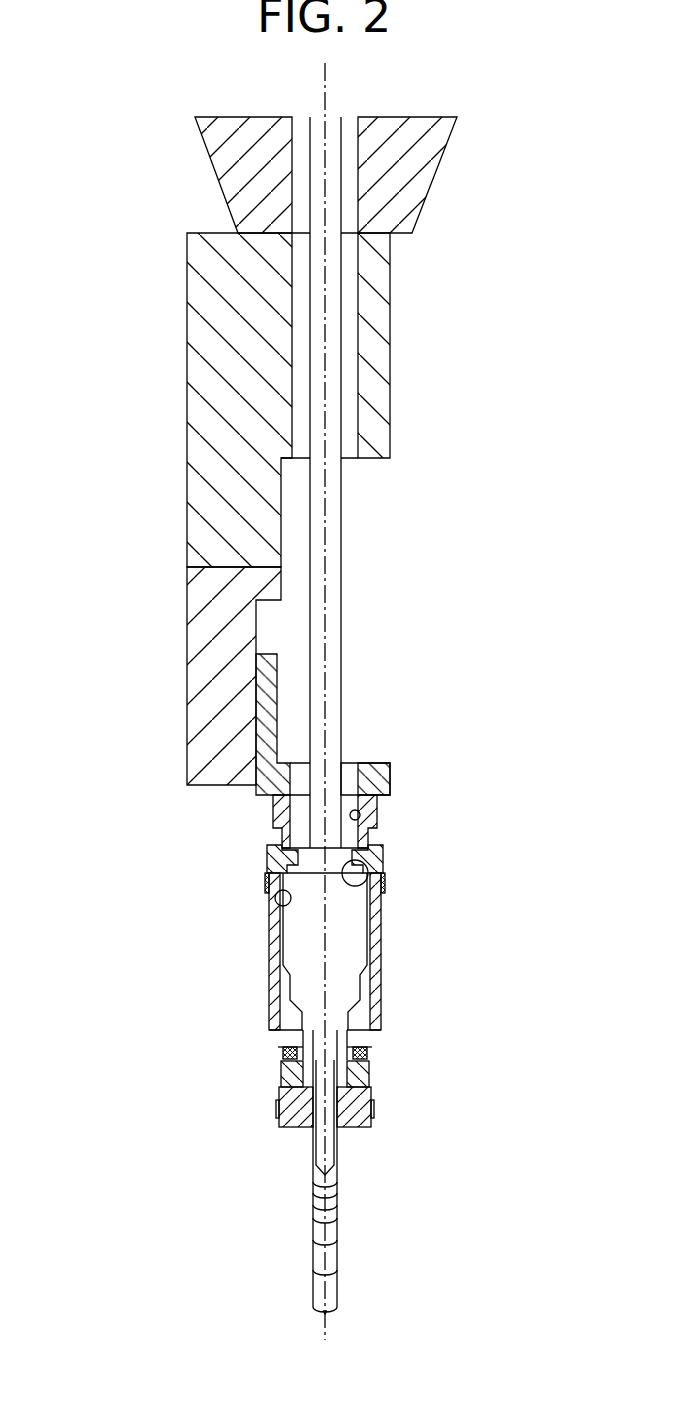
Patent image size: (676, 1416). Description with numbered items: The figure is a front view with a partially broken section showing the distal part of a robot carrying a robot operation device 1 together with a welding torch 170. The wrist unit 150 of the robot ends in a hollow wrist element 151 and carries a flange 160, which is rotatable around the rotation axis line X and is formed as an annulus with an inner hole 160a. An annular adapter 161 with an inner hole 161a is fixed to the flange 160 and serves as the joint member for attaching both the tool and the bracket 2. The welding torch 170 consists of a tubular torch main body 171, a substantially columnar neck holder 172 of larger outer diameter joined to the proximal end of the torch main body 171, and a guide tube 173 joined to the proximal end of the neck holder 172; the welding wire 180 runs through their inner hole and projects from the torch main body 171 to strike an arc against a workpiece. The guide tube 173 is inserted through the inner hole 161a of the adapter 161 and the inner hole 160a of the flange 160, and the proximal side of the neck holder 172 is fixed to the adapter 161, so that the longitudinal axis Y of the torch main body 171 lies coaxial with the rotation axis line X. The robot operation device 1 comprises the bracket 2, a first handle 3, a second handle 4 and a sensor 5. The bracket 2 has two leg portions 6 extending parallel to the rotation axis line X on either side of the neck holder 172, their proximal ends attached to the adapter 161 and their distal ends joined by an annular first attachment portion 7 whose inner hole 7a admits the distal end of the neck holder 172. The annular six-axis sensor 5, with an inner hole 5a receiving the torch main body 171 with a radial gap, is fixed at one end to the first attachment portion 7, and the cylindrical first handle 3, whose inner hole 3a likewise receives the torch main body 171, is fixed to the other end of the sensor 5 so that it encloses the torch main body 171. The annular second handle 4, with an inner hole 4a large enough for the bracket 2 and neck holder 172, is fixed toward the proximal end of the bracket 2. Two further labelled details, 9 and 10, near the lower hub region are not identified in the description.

The robot operation device 1 is at (200, 970).
The bracket 2 is at (279, 951).
The first handle 3 is at (278, 1105).
The inner hole 3a is at (311, 1125).
The second handle 4 is at (265, 877).
The inner hole 4a is at (283, 898).
The sensor 5 is at (280, 1072).
The inner hole 5a is at (372, 1075).
The leg portions 6 is at (267, 995).
The first attachment portion 7 is at (283, 1053).
The inner hole 7a is at (367, 1050).
The needle hub (right) 9 is at (372, 1108).
The needle hub tip portion 10 is at (372, 1122).
The wrist unit 150 is at (187, 693).
The hollow wrist element 151 is at (390, 775).
The flange 160 is at (273, 806).
The inner hole 160a is at (372, 818).
The adapter 161 is at (267, 851).
The inner hole 161a is at (370, 888).
The welding torch 170 is at (338, 1230).
The torch main body 171 is at (331, 1152).
The neck holder 172 is at (372, 945).
The guide tube 173 is at (344, 580).
The welding wire 180 is at (326, 1312).
The rotation axis line X is at (330, 500).
The longitudinal axis Y is at (325, 1328).